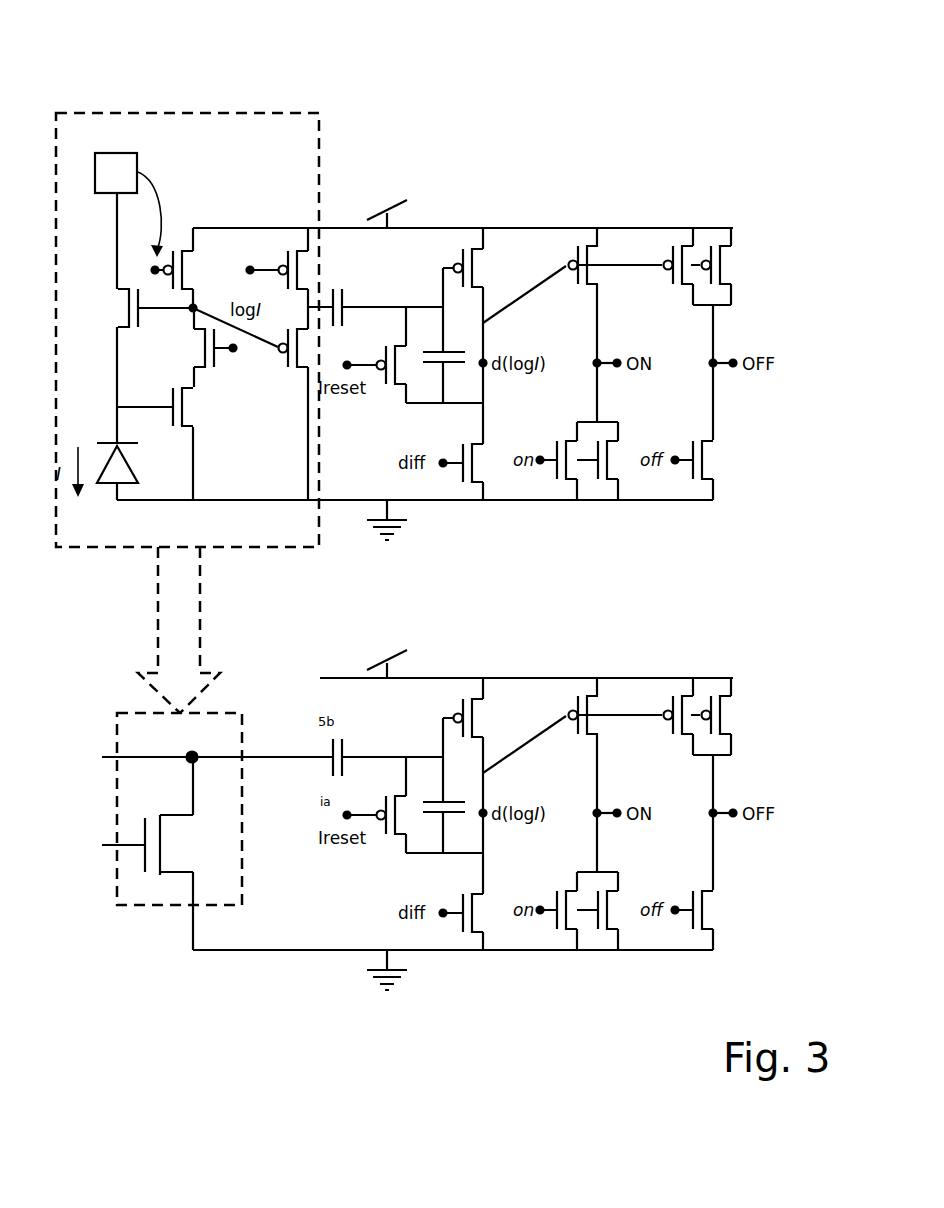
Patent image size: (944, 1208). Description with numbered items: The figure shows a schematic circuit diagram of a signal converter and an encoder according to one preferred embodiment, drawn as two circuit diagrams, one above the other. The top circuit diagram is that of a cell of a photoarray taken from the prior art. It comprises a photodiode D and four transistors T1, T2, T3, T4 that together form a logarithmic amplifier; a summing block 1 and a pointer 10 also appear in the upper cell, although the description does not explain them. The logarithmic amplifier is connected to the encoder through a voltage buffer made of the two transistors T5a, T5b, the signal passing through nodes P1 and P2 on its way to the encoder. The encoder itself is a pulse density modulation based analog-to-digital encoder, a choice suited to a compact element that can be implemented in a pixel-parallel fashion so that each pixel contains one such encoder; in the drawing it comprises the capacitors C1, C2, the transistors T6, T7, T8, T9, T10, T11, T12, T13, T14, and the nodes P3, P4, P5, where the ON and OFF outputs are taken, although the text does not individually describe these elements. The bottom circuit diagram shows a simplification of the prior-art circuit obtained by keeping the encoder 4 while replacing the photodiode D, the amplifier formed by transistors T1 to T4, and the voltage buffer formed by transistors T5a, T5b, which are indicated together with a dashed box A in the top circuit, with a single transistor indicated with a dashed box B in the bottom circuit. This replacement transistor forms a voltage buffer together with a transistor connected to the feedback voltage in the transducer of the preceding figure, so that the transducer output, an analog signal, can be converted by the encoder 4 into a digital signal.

The summing unit 1 is at (114, 152).
The photoreceptor circuit 10 is at (232, 178).
The encoder 4 is at (672, 624).
The dashed box A is at (280, 113).
The dashed box B is at (117, 883).
The photodiode D is at (124, 471).
The transistor T1 is at (166, 443).
The transistor T2 is at (208, 347).
The transistor T3 is at (182, 268).
The transistor T4 is at (144, 308).
The transistor T5a is at (263, 404).
The transistor T5b is at (290, 268).
The transistor T6 is at (468, 295).
The reset transistor T7 is at (414, 355).
The transistor T8 is at (466, 431).
The transistor T9 is at (616, 325).
The transistor T10 is at (612, 460).
The transistor T11 is at (554, 458).
The transistor T12 is at (727, 334).
The transistor T13 is at (677, 266).
The transistor T14 is at (707, 470).
The capacitor C1 is at (446, 355).
The capacitor C2 is at (375, 299).
The node P1 is at (205, 299).
The node P2 is at (296, 308).
The node P3 is at (486, 358).
The node P4 is at (598, 355).
The node P5 is at (712, 355).